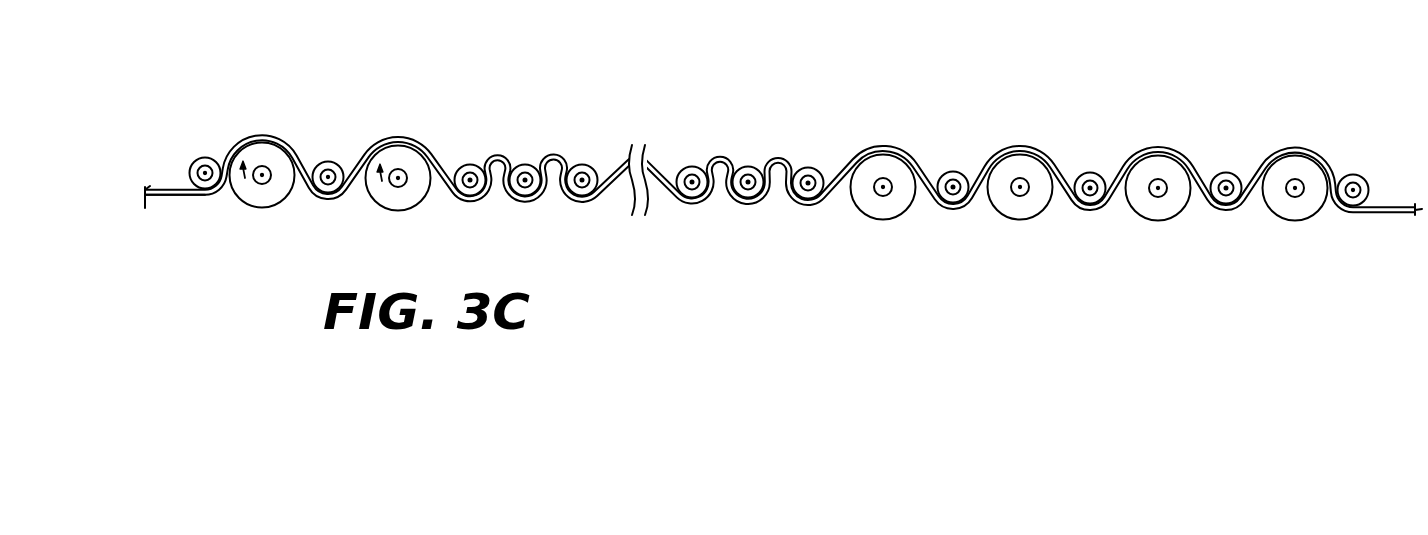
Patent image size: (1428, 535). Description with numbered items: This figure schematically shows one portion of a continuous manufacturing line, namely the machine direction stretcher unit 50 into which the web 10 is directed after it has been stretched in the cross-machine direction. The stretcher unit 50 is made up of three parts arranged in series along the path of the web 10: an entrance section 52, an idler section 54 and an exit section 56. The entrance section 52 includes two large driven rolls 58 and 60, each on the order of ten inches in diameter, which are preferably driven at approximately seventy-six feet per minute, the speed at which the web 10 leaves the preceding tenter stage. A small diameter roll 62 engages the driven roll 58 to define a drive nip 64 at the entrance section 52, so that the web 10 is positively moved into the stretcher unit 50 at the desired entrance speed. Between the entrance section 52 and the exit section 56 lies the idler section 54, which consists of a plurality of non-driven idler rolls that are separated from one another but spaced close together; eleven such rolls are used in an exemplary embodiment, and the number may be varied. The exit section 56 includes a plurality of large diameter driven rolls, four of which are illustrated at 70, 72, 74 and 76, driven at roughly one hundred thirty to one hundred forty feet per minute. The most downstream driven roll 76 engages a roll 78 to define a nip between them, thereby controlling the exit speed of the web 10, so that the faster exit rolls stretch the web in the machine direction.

The web 10 is at (180, 200).
The machine direction stretcher unit 50 is at (823, 90).
The entrance section 52 is at (328, 148).
The idler section 54 is at (705, 157).
The exit section 56 is at (1100, 150).
The large driven roll 58 is at (263, 200).
The large driven roll 60 is at (388, 198).
The small diameter roll 62 is at (212, 152).
The drive nip 64 is at (227, 195).
The driven roll 70 is at (892, 204).
The driven roll 72 is at (1032, 205).
The driven roll 74 is at (1162, 205).
The driven roll 76 is at (1290, 205).
The roll 78 is at (1363, 173).